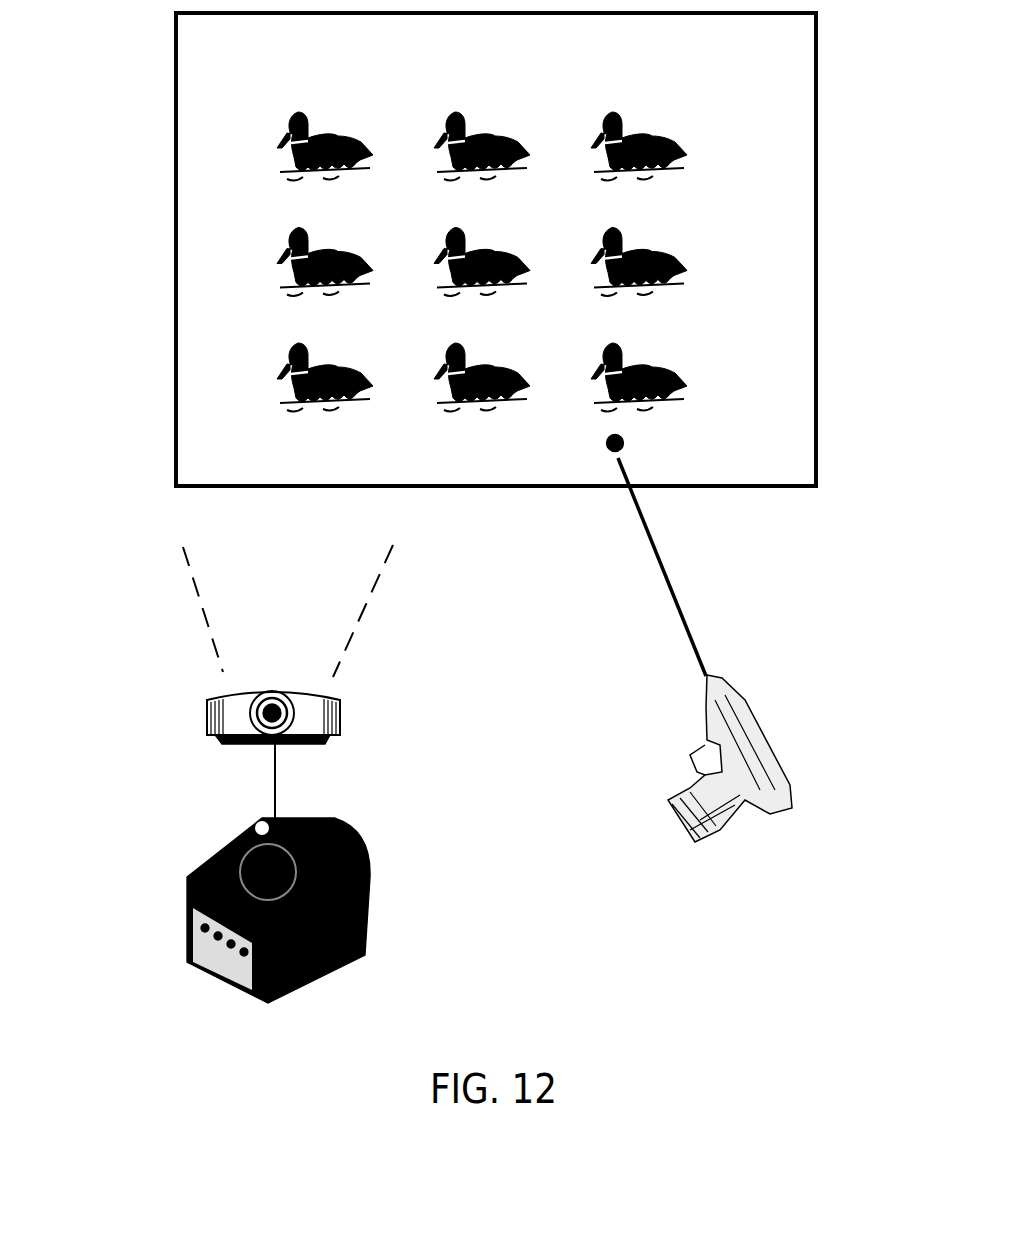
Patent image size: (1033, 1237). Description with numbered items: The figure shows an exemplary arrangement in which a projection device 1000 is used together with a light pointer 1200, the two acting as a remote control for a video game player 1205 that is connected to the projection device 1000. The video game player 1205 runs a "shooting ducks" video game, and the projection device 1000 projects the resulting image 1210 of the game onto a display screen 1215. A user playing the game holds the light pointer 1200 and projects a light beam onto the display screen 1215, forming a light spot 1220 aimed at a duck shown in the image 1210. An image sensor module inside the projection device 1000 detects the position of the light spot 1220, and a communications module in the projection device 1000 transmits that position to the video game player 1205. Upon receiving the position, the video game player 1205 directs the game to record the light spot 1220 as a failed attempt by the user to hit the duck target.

The display screen 1215 is at (173, 118).
The image 1210 is at (743, 237).
The light spot 1220 is at (610, 452).
The projection device 1000 is at (210, 702).
The video game player 1205 is at (203, 863).
The light pointer 1200 is at (708, 725).